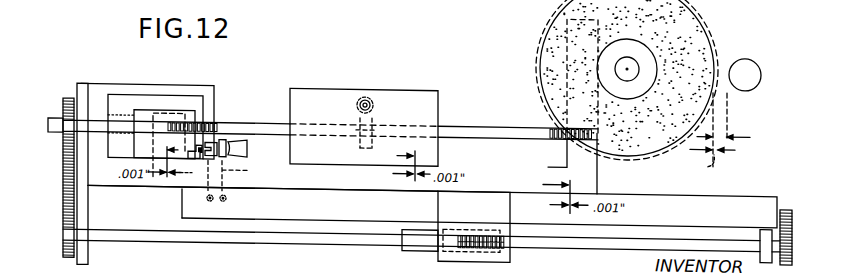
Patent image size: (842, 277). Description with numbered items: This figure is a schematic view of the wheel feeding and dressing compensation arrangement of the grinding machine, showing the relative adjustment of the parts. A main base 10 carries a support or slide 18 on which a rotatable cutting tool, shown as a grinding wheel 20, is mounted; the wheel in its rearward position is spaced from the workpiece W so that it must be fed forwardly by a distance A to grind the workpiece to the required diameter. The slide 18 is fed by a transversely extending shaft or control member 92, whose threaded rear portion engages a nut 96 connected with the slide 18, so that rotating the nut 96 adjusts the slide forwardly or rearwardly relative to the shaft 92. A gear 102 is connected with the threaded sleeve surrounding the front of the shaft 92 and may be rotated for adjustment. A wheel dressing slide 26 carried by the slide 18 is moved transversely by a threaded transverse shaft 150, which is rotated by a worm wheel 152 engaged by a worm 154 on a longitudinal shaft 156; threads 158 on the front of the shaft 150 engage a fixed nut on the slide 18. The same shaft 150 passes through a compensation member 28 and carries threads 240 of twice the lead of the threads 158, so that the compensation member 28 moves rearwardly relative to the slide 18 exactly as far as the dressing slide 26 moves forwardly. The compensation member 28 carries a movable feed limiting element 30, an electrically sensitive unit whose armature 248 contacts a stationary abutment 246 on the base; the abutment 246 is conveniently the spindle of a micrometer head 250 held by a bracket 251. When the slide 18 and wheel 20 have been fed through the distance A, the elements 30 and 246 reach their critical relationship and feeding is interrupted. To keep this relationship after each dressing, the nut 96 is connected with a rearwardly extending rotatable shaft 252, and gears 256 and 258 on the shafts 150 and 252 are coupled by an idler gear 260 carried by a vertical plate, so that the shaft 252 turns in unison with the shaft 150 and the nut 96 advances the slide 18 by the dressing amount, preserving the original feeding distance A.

The main base 10 is at (743, 186).
The support or slide 18 is at (158, 184).
The cutting tool 20 is at (704, 37).
The slide 26 is at (418, 90).
The compensation member 28 is at (170, 107).
The first element or electrically sensitive unit 30 is at (182, 197).
The shaft or control member 92 is at (563, 243).
The nut 96 is at (416, 239).
The gear 102 is at (787, 193).
The transverse shaft 150 is at (500, 124).
The worm wheel 152 is at (362, 136).
The worm 154 is at (380, 94).
The longitudinal shaft 156 is at (364, 91).
The threads 158 is at (556, 131).
The threads 240 is at (210, 136).
The abutment or second element 246 is at (183, 203).
The armature 248 is at (181, 183).
The micrometer head 250 is at (238, 138).
The bracket 251 is at (245, 181).
The rotatable shaft 252 is at (267, 236).
The gear 256 is at (64, 113).
The gear 258 is at (64, 247).
The idler gear 260 is at (64, 178).
The workpiece W is at (753, 48).
The feeding distance A is at (719, 134).